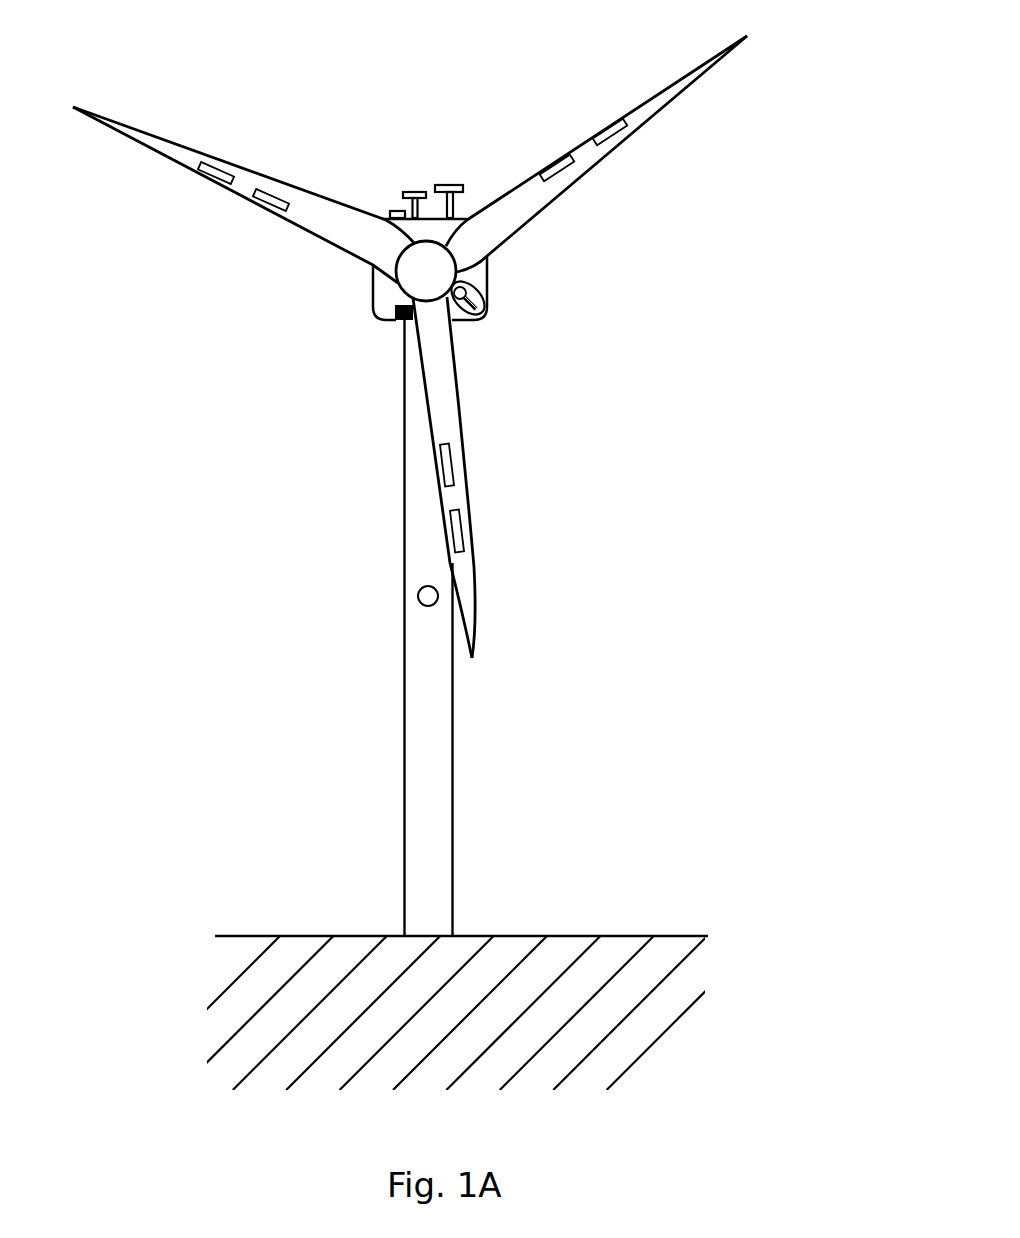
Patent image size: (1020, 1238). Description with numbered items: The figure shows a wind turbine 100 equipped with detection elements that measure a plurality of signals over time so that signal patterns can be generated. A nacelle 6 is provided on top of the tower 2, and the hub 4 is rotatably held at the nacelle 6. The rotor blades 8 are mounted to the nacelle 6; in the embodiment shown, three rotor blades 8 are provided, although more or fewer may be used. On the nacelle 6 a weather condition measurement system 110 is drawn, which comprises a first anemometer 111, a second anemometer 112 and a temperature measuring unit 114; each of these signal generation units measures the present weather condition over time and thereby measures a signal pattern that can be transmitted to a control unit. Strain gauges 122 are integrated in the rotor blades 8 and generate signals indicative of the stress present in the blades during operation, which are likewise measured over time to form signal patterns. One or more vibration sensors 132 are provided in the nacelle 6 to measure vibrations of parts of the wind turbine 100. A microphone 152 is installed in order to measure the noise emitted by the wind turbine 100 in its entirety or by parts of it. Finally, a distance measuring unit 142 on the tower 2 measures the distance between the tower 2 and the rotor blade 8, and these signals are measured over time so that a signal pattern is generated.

The wind turbine 100 is at (790, 99).
The tower 2 is at (452, 817).
The hub 4 is at (482, 309).
The nacelle 6 is at (383, 303).
The rotor blades 8 is at (636, 133).
The weather condition measurement system 110 is at (413, 100).
The first anemometer 111 is at (413, 192).
The second anemometer 112 is at (448, 185).
The temperature measuring unit 114 is at (390, 212).
The strain gauges 122 is at (212, 170).
The vibration sensors 132 is at (386, 322).
The distance measuring unit 142 is at (417, 595).
The microphones 152 is at (466, 304).